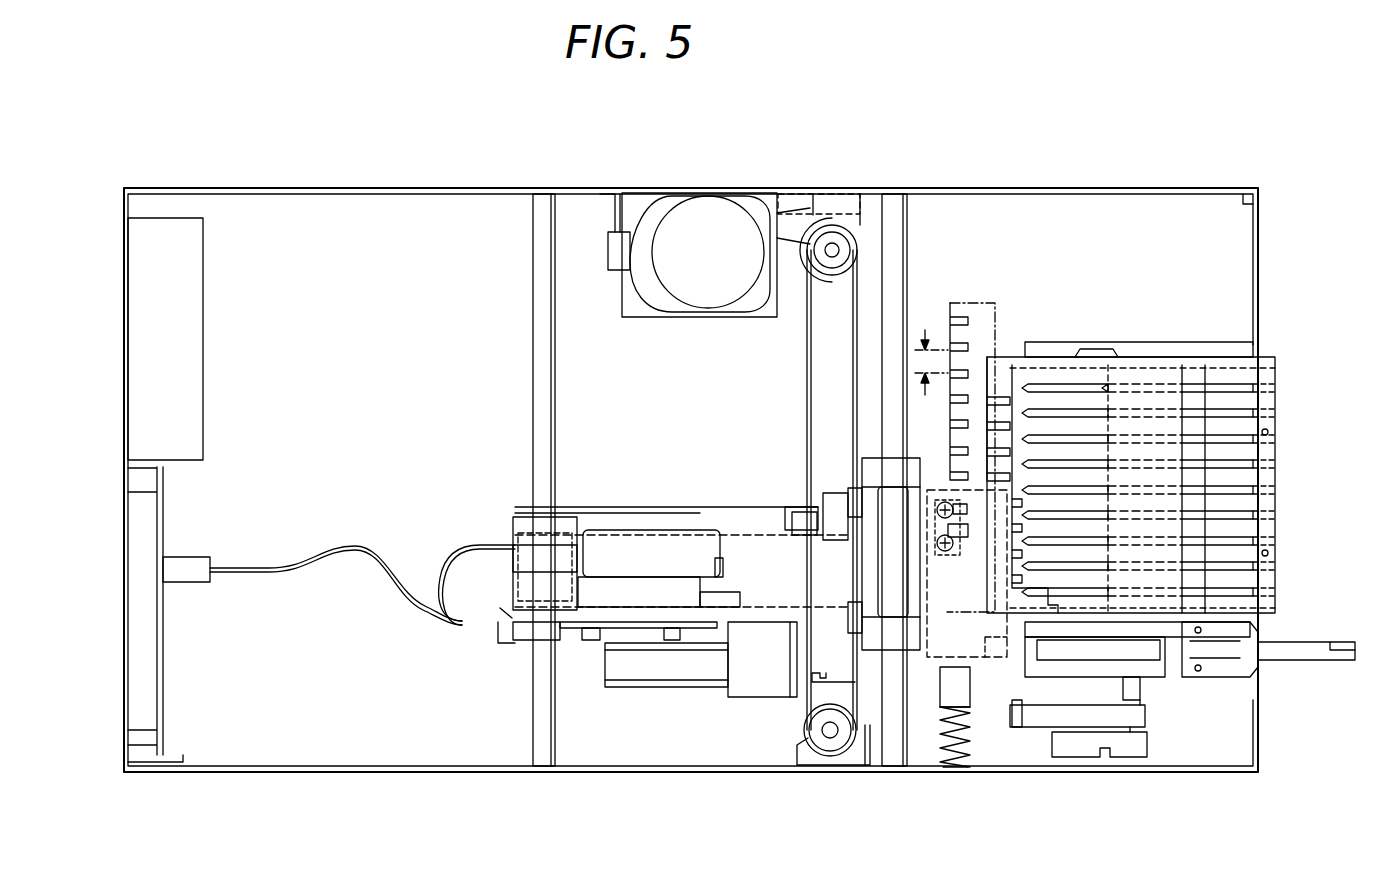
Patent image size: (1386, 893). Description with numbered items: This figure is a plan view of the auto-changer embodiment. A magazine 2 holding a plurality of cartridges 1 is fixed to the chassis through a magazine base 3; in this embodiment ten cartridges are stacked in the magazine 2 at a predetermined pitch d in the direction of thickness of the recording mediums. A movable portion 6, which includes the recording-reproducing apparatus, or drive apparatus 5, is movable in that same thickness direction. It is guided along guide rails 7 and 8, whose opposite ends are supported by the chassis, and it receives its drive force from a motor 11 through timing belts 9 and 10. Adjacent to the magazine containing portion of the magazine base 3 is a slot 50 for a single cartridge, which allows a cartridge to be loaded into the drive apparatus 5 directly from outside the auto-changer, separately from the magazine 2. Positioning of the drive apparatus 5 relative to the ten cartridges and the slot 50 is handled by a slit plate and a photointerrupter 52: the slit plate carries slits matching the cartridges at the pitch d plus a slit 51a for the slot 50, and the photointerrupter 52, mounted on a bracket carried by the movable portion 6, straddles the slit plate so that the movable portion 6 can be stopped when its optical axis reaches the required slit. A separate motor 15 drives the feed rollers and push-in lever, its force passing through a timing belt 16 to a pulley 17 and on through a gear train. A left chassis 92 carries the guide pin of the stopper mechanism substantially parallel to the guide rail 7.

The cartridge 1 is at (1065, 370).
The magazine 2 is at (1153, 395).
The magazine base 3 is at (1200, 348).
The recording-reproducing apparatus 5 is at (778, 600).
The movable portion 6 is at (768, 597).
The guide rail 7 is at (907, 238).
The guide rail 8 is at (536, 208).
The timing belt 9 is at (857, 688).
The timing belt 10 is at (800, 210).
The motor 11 is at (731, 208).
The motor 15 is at (601, 597).
The timing belt 16 is at (625, 667).
The pulley 17 is at (672, 688).
The slot 50 is at (1062, 650).
The slit 51a is at (965, 600).
The photointerrupter 52 is at (948, 575).
The left chassis 92 is at (1196, 775).
The pitch d is at (928, 345).